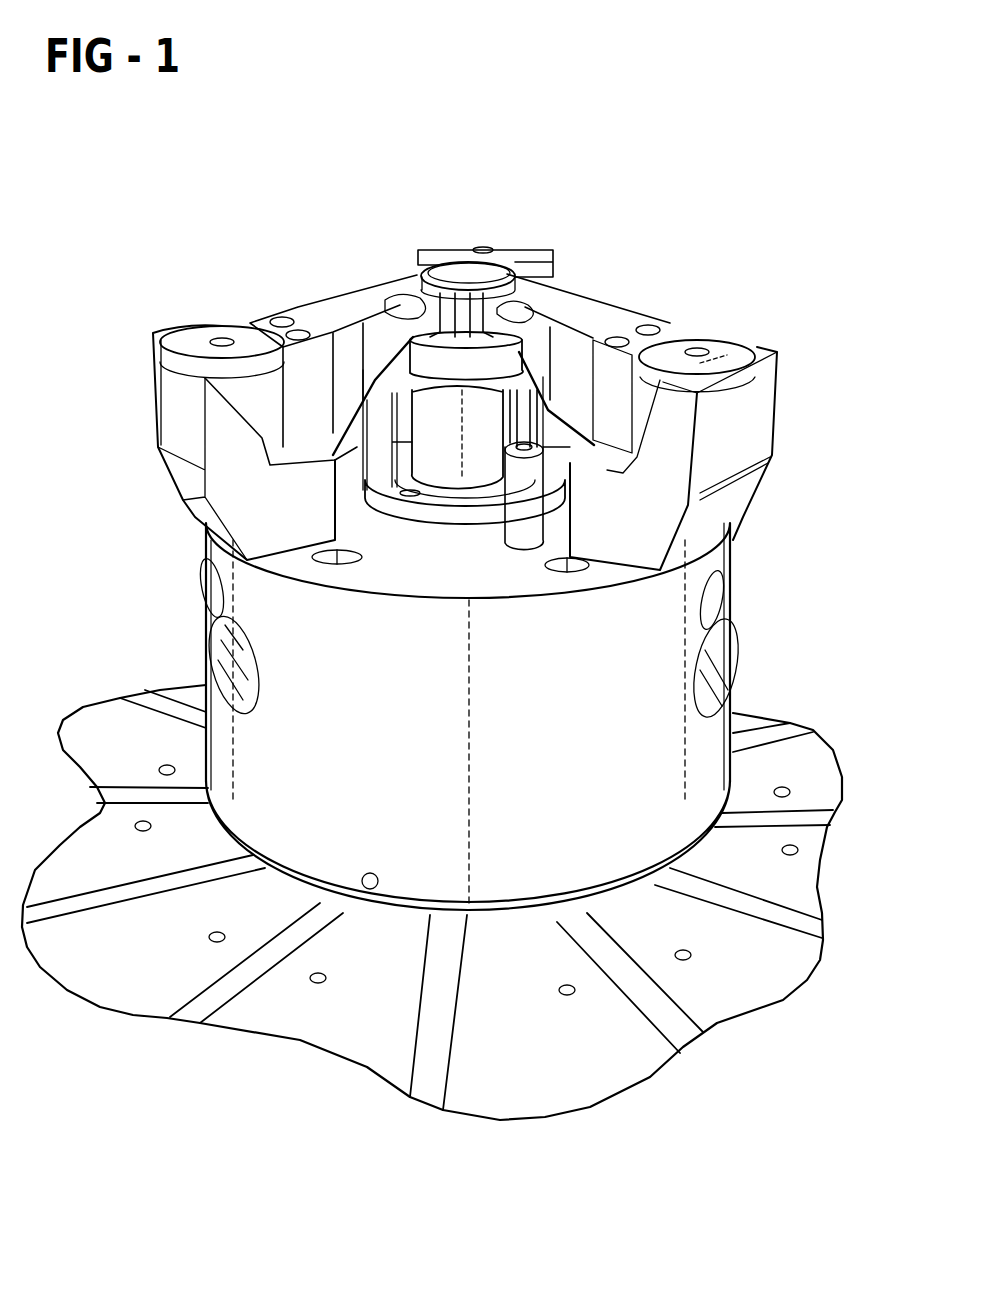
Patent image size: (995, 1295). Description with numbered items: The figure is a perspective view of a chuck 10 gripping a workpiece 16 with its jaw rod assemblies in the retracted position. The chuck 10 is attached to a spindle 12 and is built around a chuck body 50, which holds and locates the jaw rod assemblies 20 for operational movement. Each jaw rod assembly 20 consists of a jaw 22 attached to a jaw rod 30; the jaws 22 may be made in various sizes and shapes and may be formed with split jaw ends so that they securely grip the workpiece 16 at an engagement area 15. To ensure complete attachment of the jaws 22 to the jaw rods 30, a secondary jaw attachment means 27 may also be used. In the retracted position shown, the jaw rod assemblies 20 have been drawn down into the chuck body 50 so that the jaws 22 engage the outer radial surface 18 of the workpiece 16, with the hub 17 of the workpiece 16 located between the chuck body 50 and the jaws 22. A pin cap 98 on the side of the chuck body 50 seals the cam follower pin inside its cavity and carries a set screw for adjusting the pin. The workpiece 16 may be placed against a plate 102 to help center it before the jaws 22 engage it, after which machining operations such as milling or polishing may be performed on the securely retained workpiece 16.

The chuck 10 is at (815, 392).
The spindle 12 is at (747, 990).
The engagement area 15 is at (415, 268).
The workpiece 16 is at (450, 275).
The hub 17 is at (478, 355).
The outer radial surface 18 is at (462, 290).
The jaw rod assembly 20 is at (258, 312).
The jaw 22 is at (343, 300).
The secondary jaw attachment means 27 is at (648, 330).
The jaw rod 30 is at (215, 345).
The chuck body 50 is at (252, 768).
The pin cap 98 is at (717, 647).
The plate 102 is at (430, 500).